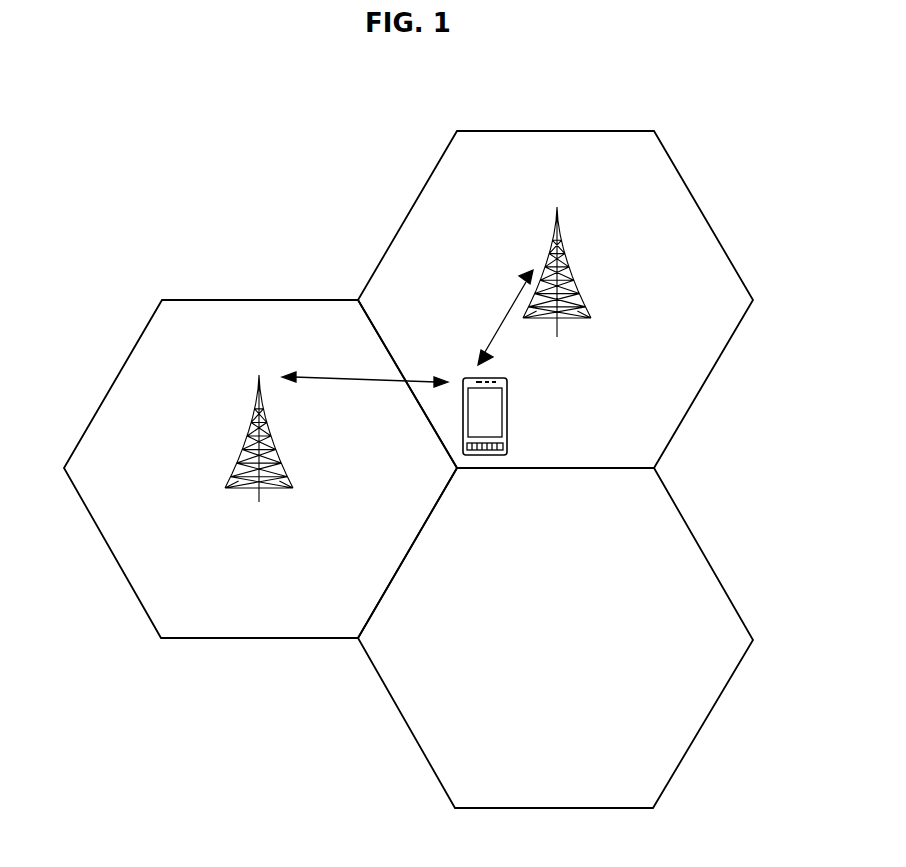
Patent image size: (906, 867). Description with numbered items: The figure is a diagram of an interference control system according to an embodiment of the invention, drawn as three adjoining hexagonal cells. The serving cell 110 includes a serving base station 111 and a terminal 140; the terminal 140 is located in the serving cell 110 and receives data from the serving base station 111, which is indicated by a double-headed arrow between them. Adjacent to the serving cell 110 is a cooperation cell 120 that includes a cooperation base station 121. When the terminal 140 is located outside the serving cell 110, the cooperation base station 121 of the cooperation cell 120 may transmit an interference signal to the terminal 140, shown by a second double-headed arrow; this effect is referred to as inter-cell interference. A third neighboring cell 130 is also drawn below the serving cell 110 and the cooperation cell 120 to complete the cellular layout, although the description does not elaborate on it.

The serving cell 110 is at (557, 131).
The serving base station 111 is at (556, 207).
The cooperation cell 120 is at (112, 380).
The cooperation base station 121 is at (259, 375).
The third cell 130 is at (703, 553).
The terminal 140 is at (507, 413).